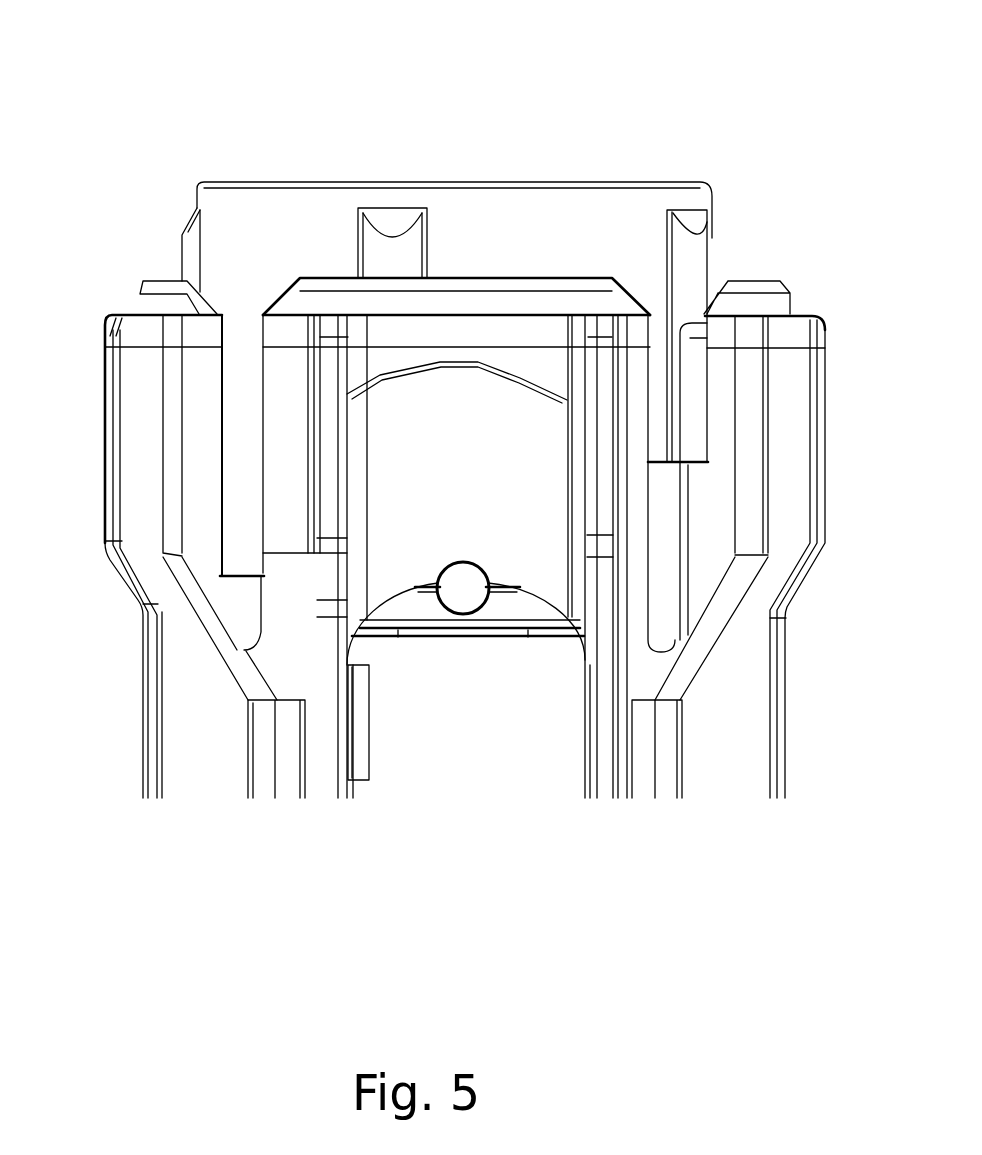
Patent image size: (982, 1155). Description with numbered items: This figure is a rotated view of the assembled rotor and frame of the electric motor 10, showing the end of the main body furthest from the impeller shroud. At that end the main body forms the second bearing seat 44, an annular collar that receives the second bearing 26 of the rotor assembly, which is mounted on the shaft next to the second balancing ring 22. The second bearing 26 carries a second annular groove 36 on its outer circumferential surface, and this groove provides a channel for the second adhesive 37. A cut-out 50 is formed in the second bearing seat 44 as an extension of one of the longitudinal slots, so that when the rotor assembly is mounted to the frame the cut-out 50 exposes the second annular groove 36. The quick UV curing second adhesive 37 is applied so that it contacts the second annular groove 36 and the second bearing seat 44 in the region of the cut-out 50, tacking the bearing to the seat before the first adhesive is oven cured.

The electric motor 10 is at (232, 105).
The second balancing ring 22 is at (371, 790).
The second bearing 26 is at (528, 608).
The second annular groove 36 is at (490, 585).
The second adhesive 37 is at (475, 590).
The second bearing seat 44 is at (400, 528).
The cut-out 50 is at (386, 598).